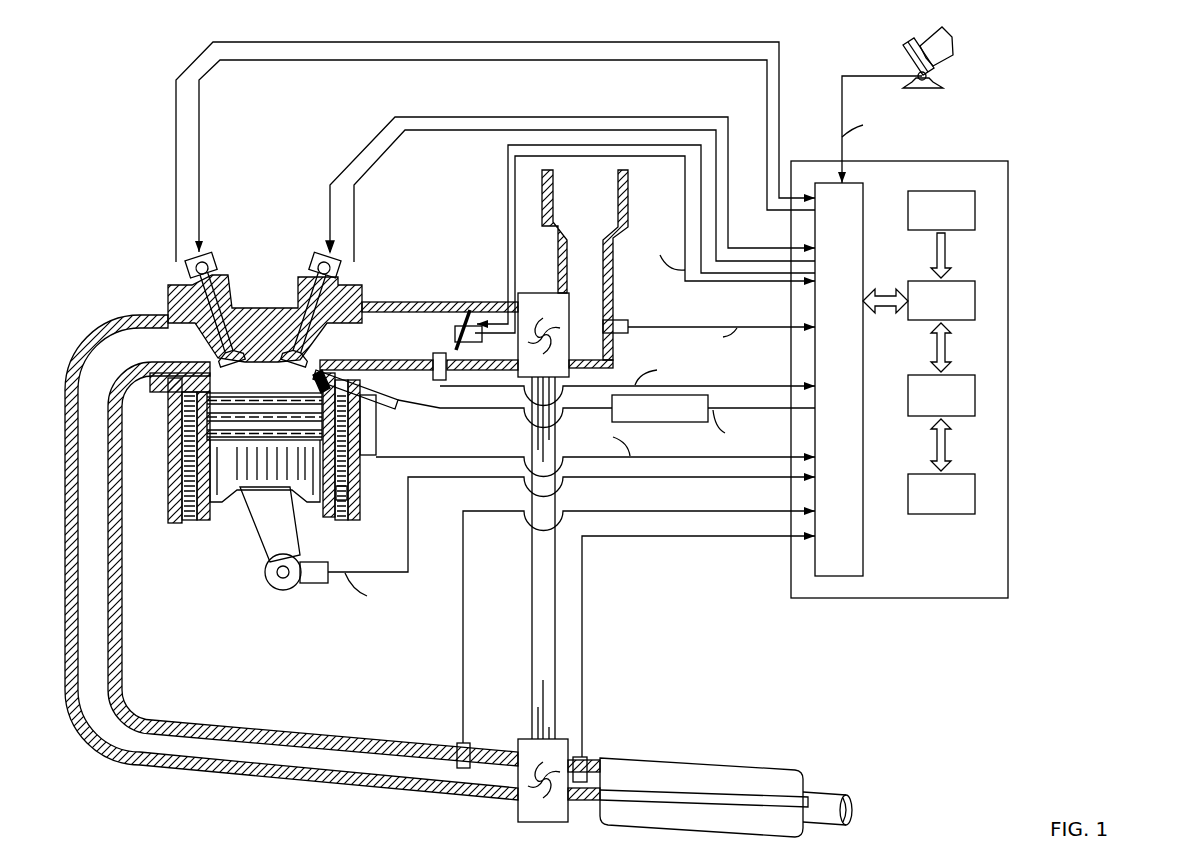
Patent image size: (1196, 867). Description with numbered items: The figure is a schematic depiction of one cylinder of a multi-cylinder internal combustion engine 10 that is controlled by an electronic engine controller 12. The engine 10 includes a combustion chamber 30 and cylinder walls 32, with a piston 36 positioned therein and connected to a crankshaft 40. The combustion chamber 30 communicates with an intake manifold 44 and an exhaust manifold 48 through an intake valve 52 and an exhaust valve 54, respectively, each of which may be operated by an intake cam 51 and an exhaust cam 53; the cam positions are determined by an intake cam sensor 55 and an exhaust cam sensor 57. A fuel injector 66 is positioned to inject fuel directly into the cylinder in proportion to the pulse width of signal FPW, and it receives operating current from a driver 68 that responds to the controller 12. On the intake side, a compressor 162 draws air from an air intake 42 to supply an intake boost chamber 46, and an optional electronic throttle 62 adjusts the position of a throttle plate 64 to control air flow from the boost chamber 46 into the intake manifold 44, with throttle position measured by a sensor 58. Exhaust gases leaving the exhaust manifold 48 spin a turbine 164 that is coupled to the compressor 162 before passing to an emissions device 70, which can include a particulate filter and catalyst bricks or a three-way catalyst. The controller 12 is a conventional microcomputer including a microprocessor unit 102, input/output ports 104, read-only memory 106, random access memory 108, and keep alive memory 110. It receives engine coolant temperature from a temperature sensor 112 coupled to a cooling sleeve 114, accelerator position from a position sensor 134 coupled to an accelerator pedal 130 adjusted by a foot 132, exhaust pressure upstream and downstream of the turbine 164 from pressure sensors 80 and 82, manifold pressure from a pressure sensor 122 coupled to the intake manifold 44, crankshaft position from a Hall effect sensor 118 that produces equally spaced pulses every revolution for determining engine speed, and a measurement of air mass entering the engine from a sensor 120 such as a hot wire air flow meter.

The internal combustion engine 10 is at (106, 241).
The electronic engine controller 12 is at (1008, 161).
The combustion chamber 30 is at (260, 380).
The cylinder walls 32 is at (208, 507).
The piston 36 is at (248, 478).
The crankshaft 40 is at (276, 587).
The air intake 42 is at (597, 215).
The intake manifold 44 is at (400, 345).
The intake boost chamber 46 is at (508, 358).
The exhaust manifold 48 is at (150, 355).
The intake cam 51 is at (318, 257).
The intake valve 52 is at (300, 352).
The exhaust cam 53 is at (208, 257).
The exhaust valve 54 is at (220, 358).
The intake cam sensor 55 is at (333, 270).
The exhaust cam sensor 57 is at (175, 270).
The throttle position sensor 58 is at (487, 310).
The electronic throttle 62 is at (457, 314).
The throttle plate 64 is at (475, 306).
The fuel injector 66 is at (372, 389).
The driver 68 is at (708, 422).
The emissions device 70 is at (610, 823).
The pressure sensor 80 is at (462, 740).
The pressure sensor 82 is at (593, 757).
The microprocessor unit 102 is at (975, 300).
The input/output ports 104 is at (863, 190).
The read-only memory 106 is at (975, 205).
The random access memory 108 is at (975, 395).
The keep alive memory 110 is at (975, 493).
The temperature sensor 112 is at (365, 441).
The cooling sleeve 114 is at (348, 494).
The Hall effect sensor 118 is at (309, 584).
The air mass sensor 120 is at (627, 323).
The pressure sensor 122 is at (440, 352).
The accelerator pedal 130 is at (903, 50).
The foot 132 is at (952, 42).
The position sensor 134 is at (933, 77).
The compressor 162 is at (550, 292).
The turbine 164 is at (523, 738).